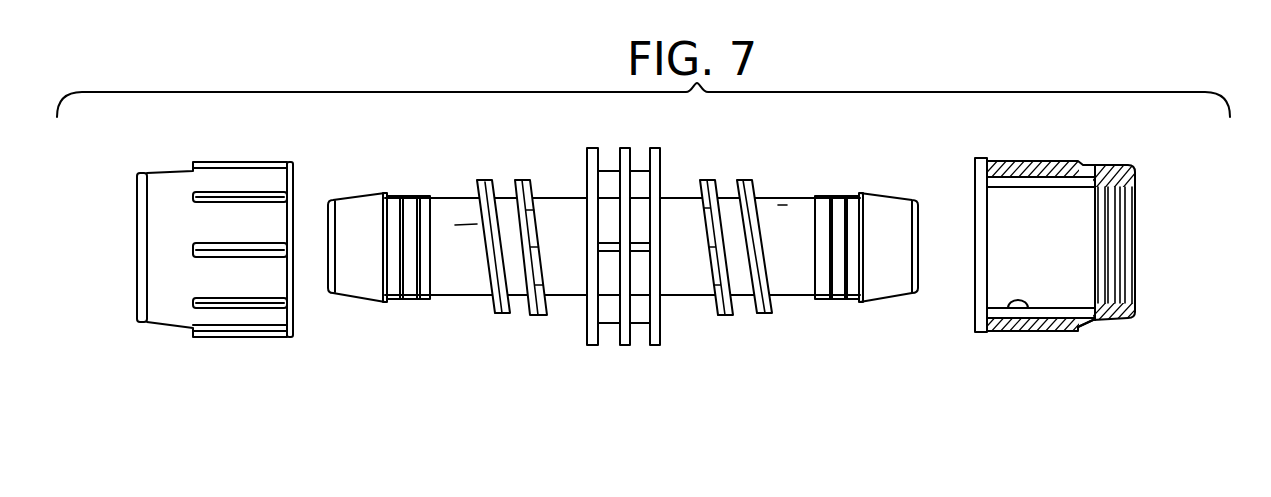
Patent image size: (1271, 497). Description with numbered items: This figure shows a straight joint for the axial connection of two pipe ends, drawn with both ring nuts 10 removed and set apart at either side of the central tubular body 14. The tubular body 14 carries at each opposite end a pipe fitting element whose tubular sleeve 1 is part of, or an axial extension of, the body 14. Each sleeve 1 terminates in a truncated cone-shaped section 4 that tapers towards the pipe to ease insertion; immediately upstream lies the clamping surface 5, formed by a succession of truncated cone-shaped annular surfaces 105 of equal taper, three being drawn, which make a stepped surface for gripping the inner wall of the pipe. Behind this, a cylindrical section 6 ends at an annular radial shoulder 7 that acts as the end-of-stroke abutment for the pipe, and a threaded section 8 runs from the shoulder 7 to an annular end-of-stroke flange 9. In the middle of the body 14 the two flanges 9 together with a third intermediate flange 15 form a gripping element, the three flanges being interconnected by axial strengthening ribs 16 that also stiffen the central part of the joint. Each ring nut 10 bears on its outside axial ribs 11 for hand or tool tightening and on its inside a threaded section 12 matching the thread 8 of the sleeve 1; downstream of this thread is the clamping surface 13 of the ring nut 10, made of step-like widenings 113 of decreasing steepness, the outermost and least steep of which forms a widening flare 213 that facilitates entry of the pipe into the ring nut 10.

The tubular sleeve 1 is at (452, 300).
The tapering section 4 is at (357, 300).
The clamping surface 5 is at (408, 302).
The cylindrical section 6 is at (453, 199).
The annular radial shoulder 7 is at (455, 225).
The threaded section 8 is at (484, 182).
The end-of-stroke flange 9 is at (590, 148).
The ring nut 10 is at (167, 168).
The axial ribs 11 is at (197, 256).
The threaded section 12 is at (1027, 310).
The clamping surface 13 is at (1110, 190).
The tubular body 14 is at (550, 199).
The intermediate flange 15 is at (626, 143).
The axial strengthening ribs 16 is at (610, 168).
The truncated cone-shaped annular surfaces 105 is at (420, 198).
The step-like widenings 113 is at (1122, 277).
The widening flare 213 is at (1137, 305).